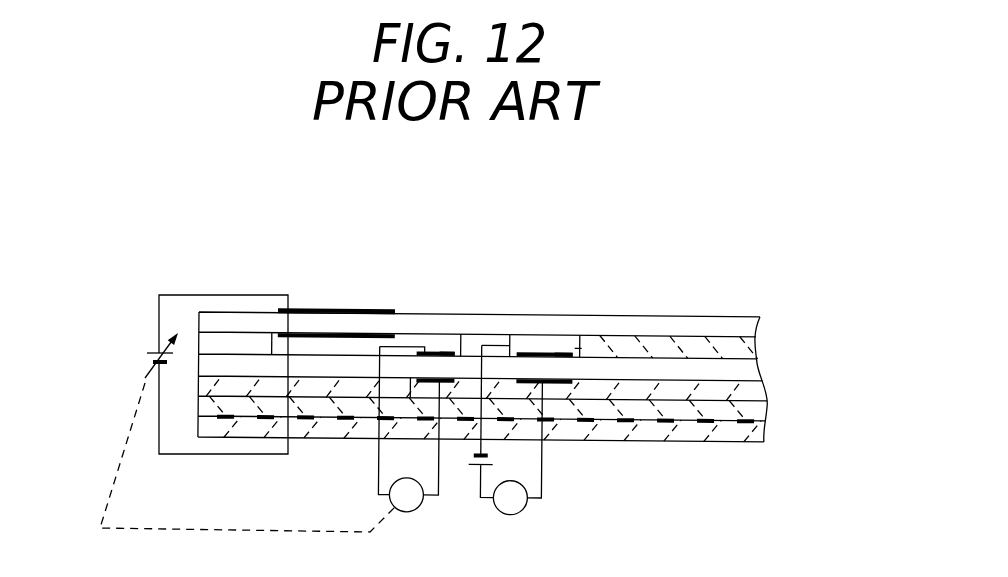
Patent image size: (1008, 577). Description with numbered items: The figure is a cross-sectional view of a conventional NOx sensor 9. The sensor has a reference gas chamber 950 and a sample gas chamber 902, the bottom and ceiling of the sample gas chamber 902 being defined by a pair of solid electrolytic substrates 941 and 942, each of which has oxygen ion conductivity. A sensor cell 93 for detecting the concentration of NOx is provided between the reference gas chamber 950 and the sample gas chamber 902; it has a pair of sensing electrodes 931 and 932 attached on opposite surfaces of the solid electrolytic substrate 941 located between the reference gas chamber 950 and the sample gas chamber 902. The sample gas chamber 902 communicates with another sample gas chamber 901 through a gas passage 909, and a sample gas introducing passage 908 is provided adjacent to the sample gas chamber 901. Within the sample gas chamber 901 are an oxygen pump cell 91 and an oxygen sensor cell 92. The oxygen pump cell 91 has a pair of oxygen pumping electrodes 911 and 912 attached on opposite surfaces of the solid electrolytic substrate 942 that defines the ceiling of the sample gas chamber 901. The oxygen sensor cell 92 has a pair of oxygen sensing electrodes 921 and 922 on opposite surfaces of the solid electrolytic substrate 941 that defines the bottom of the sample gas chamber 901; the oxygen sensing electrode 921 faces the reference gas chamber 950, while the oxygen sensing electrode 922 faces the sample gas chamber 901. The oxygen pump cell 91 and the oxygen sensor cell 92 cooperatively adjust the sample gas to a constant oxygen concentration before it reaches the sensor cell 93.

The NOx sensor 9 is at (365, 262).
The oxygen pump cell 91 is at (378, 290).
The oxygen sensor cell 92 is at (439, 337).
The sensor cell 93 is at (553, 335).
The sample gas chamber 901 is at (308, 343).
The sample gas chamber 902 is at (582, 345).
The sample gas introducing passage 908 is at (219, 330).
The gas passage 909 is at (479, 340).
The oxygen pumping electrode 911 is at (342, 337).
The oxygen pumping electrode 912 is at (332, 307).
The oxygen sensing electrode 921 is at (450, 384).
The oxygen sensing electrode 922 is at (452, 350).
The sensing electrode 931 is at (562, 384).
The sensing electrode 932 is at (565, 351).
The solid electrolytic substrate 941 is at (757, 370).
The solid electrolytic substrate 942 is at (747, 328).
The reference gas chamber 950 is at (678, 390).